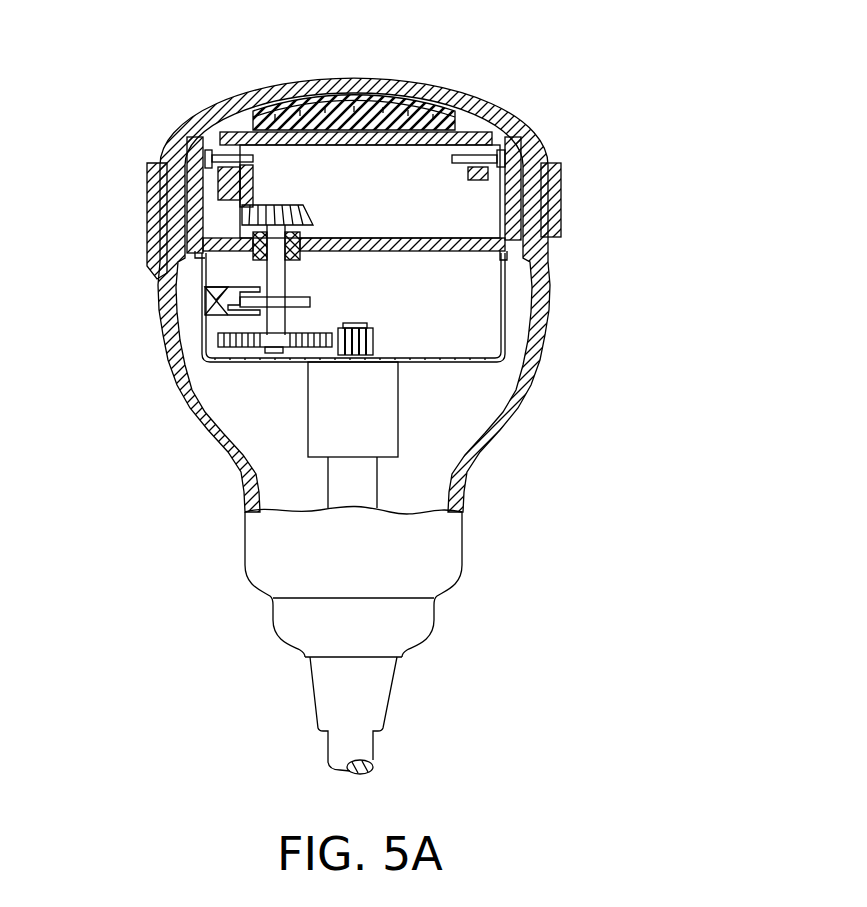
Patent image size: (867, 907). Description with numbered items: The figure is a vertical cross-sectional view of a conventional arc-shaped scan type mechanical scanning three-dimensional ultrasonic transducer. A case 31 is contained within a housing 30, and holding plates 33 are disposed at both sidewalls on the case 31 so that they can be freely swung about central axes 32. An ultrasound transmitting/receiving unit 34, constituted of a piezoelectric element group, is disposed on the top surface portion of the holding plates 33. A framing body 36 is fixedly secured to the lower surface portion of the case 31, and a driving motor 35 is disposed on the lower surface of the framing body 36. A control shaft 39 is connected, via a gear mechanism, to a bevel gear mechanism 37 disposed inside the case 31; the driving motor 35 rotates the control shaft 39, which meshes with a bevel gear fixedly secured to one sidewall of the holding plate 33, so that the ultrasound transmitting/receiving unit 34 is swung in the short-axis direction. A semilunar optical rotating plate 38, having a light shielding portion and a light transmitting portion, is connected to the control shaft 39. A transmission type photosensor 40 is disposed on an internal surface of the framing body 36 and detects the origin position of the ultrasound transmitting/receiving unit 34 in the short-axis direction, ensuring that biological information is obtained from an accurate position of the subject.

The housing 30 is at (547, 328).
The case 31 is at (505, 245).
The central axes 32 is at (507, 150).
The holding plates 33 is at (472, 140).
The ultrasound transmitting/receiving unit 34 is at (306, 103).
The driving motor 35 is at (385, 432).
The framing body 36 is at (457, 363).
The bevel gear mechanism 37 is at (315, 216).
The optical rotating plate 38 is at (312, 303).
The control shaft 39 is at (273, 318).
The transmission type photosensor 40 is at (215, 297).